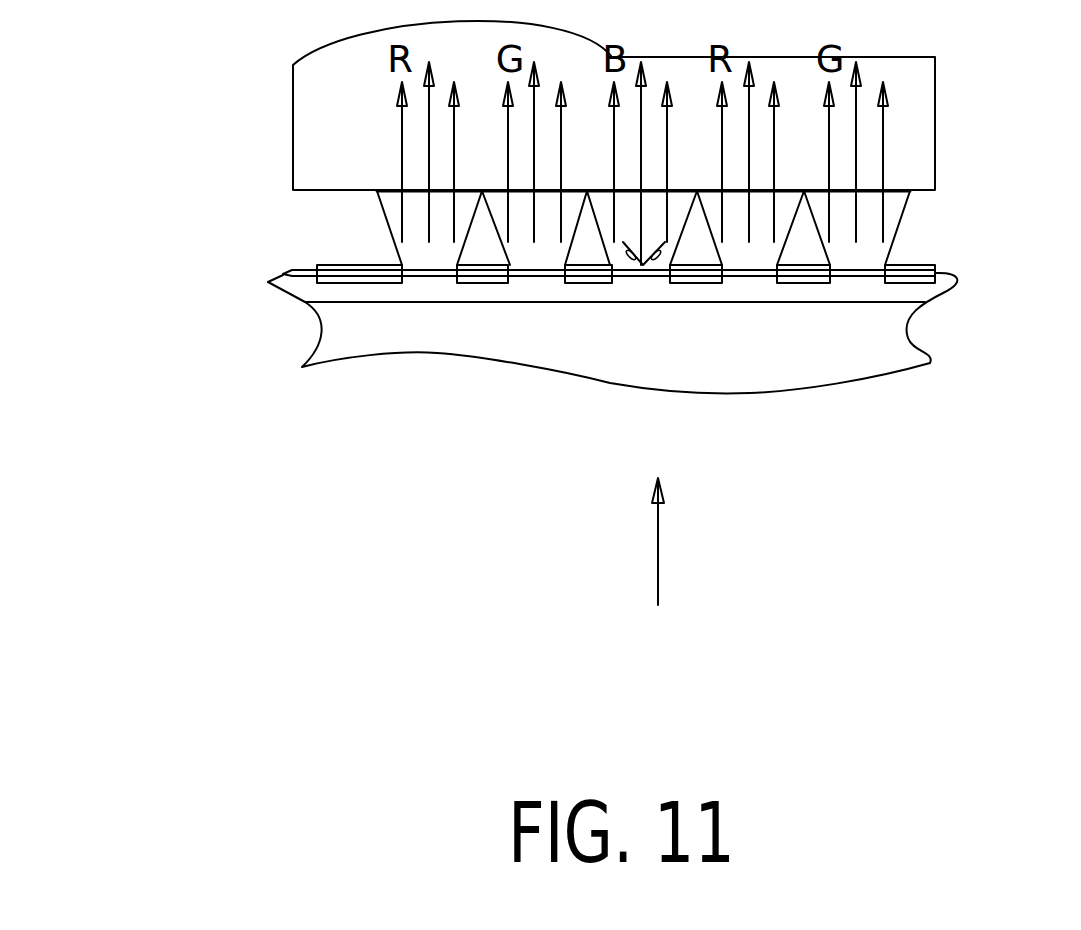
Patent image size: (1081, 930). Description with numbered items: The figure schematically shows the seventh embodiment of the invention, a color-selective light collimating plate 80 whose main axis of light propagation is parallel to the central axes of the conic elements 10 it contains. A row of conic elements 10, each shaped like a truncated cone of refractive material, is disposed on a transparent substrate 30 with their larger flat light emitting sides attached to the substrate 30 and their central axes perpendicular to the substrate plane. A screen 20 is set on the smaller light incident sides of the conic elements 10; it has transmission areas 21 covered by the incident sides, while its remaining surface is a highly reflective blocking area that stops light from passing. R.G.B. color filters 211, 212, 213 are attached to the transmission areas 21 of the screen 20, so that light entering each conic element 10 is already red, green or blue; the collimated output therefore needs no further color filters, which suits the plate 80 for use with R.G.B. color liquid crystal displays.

The conic element 10 is at (904, 208).
The screen 20 is at (983, 256).
The transmission area 21 is at (910, 283).
The transparent substrate 30 is at (292, 273).
The R color filter 211 is at (437, 283).
The G color filter 212 is at (541, 283).
The B color filter 213 is at (645, 283).
The light collimating plate 80 is at (659, 572).